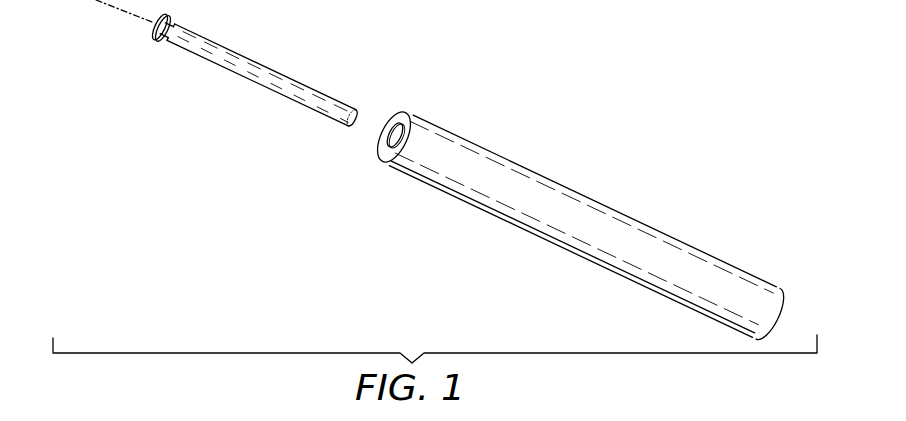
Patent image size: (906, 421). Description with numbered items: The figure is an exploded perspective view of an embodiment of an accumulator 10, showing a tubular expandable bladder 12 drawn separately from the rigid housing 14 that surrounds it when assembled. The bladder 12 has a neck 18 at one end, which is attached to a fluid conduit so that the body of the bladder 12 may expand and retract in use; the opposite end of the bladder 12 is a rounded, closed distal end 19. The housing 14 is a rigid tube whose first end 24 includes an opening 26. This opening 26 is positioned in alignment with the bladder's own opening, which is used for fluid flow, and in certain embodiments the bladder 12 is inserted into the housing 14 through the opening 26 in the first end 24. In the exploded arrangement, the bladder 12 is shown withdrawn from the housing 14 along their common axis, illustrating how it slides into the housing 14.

The accumulator 10 is at (433, 170).
The tubular expandable bladder 12 is at (251, 69).
The housing 14 is at (542, 223).
The neck 18 is at (155, 40).
The distal end of inner tube 19 is at (351, 111).
The first end 24 is at (358, 153).
The opening 26 is at (388, 134).